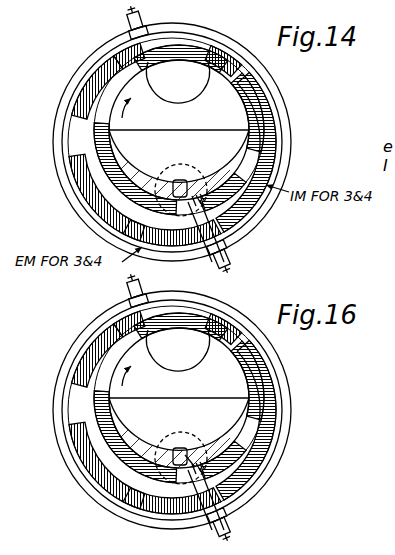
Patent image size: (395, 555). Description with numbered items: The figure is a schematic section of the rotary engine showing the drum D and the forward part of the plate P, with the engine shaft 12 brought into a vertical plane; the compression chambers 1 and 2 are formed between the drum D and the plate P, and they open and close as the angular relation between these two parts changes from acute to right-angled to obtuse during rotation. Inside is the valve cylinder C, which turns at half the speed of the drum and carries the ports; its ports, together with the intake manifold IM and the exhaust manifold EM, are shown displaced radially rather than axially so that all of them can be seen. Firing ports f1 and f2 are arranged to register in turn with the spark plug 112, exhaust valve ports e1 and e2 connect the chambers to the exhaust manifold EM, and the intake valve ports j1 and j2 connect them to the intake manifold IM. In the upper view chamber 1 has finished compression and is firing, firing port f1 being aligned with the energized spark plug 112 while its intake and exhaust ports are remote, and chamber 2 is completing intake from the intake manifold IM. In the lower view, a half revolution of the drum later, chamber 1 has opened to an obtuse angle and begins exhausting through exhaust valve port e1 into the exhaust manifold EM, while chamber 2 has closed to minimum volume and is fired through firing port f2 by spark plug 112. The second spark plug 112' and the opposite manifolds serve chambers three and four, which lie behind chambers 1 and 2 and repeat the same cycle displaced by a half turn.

In FIG. 14, the compression chamber 1 is at (191, 221).
In FIG. 16, the compression chamber 1 is at (197, 421).
In FIG. 14, the compression chamber 2 is at (178, 82).
In FIG. 16, the compression chamber 2 is at (193, 489).
In FIG. 14, the engine shaft 12 is at (178, 170).
In FIG. 16, the engine shaft 12 is at (180, 440).
In FIG. 14, the spark plug 112 is at (244, 258).
In FIG. 16, the spark plug 112 is at (244, 526).
In FIG. 14, the spark plug 112' is at (109, 22).
In FIG. 14, the valve cylinder C is at (241, 199).
In FIG. 16, the valve cylinder C is at (252, 443).
In FIG. 14, the drum D is at (195, 112).
In FIG. 16, the drum D is at (195, 380).
In FIG. 14, the plate P is at (198, 171).
In FIG. 16, the plate P is at (198, 440).
In FIG. 14, the exhaust manifold EM is at (273, 85).
In FIG. 16, the exhaust manifold EM is at (283, 420).
In FIG. 14, the intake manifold IM is at (90, 166).
In FIG. 16, the intake manifold IM is at (93, 457).
In FIG. 14, the exhaust valve port e1 is at (103, 92).
In FIG. 16, the exhaust valve port e1 is at (245, 349).
In FIG. 14, the exhaust valve port e2 is at (115, 196).
In FIG. 16, the exhaust valve port e2 is at (110, 352).
In FIG. 14, the firing port f1 is at (200, 183).
In FIG. 16, the firing port f1 is at (105, 431).
In FIG. 14, the firing port f2 is at (251, 123).
In FIG. 16, the firing port f2 is at (200, 456).
In FIG. 14, the first junction segment j1 is at (253, 101).
In FIG. 16, the first junction segment j1 is at (233, 470).
In FIG. 14, the second junction segment j2 is at (178, 68).
In FIG. 16, the second junction segment j2 is at (259, 390).